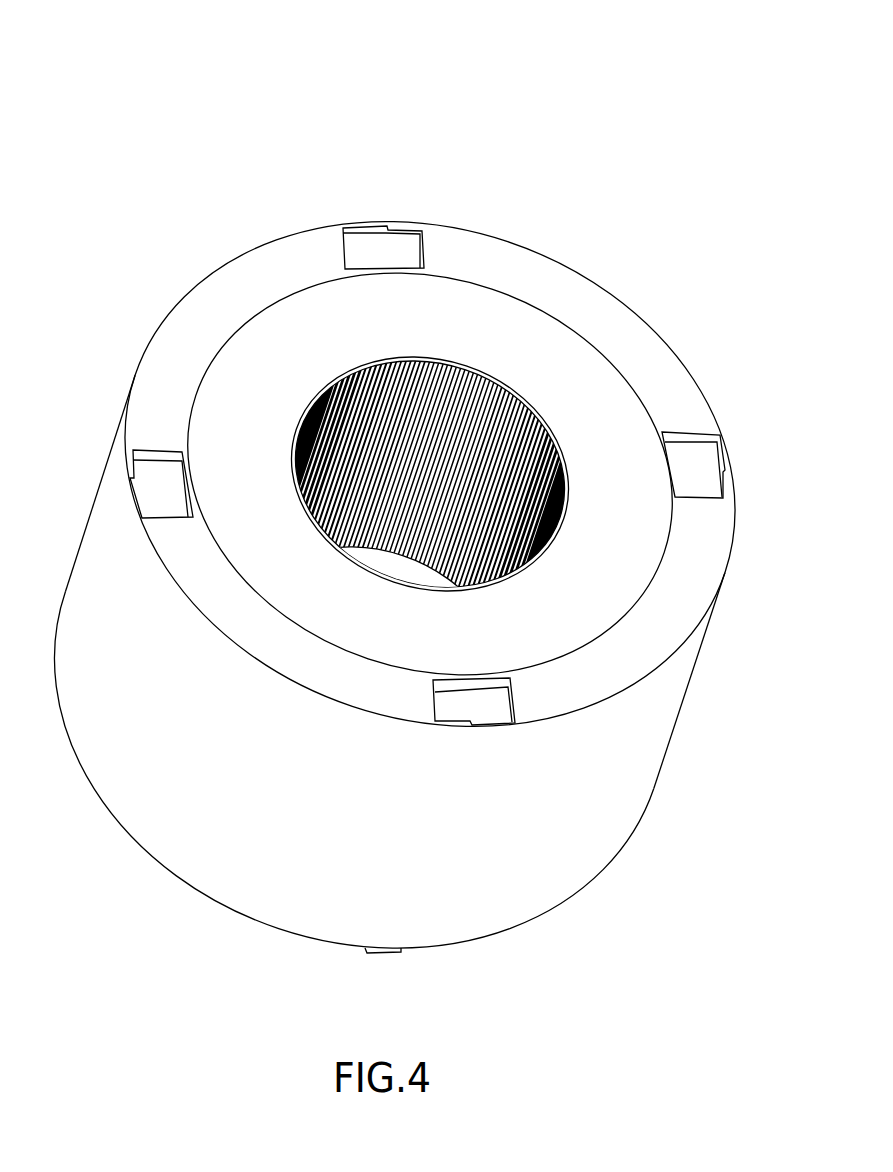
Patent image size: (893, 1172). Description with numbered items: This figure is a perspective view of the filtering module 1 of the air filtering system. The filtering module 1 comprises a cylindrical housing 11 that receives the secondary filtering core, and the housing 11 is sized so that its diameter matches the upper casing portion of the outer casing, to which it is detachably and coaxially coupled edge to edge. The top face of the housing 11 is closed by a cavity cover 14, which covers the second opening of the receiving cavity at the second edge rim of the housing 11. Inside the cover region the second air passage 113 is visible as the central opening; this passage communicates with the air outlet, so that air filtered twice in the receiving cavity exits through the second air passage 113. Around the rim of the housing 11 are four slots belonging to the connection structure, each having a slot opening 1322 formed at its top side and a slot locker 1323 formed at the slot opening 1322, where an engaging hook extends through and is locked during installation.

The filtering module 1 is at (282, 104).
The housing 11 is at (252, 288).
The cavity cover 14 is at (500, 315).
The second air passage 113 is at (533, 447).
The slot opening 1322 is at (368, 247).
The slot locker 1323 is at (412, 227).